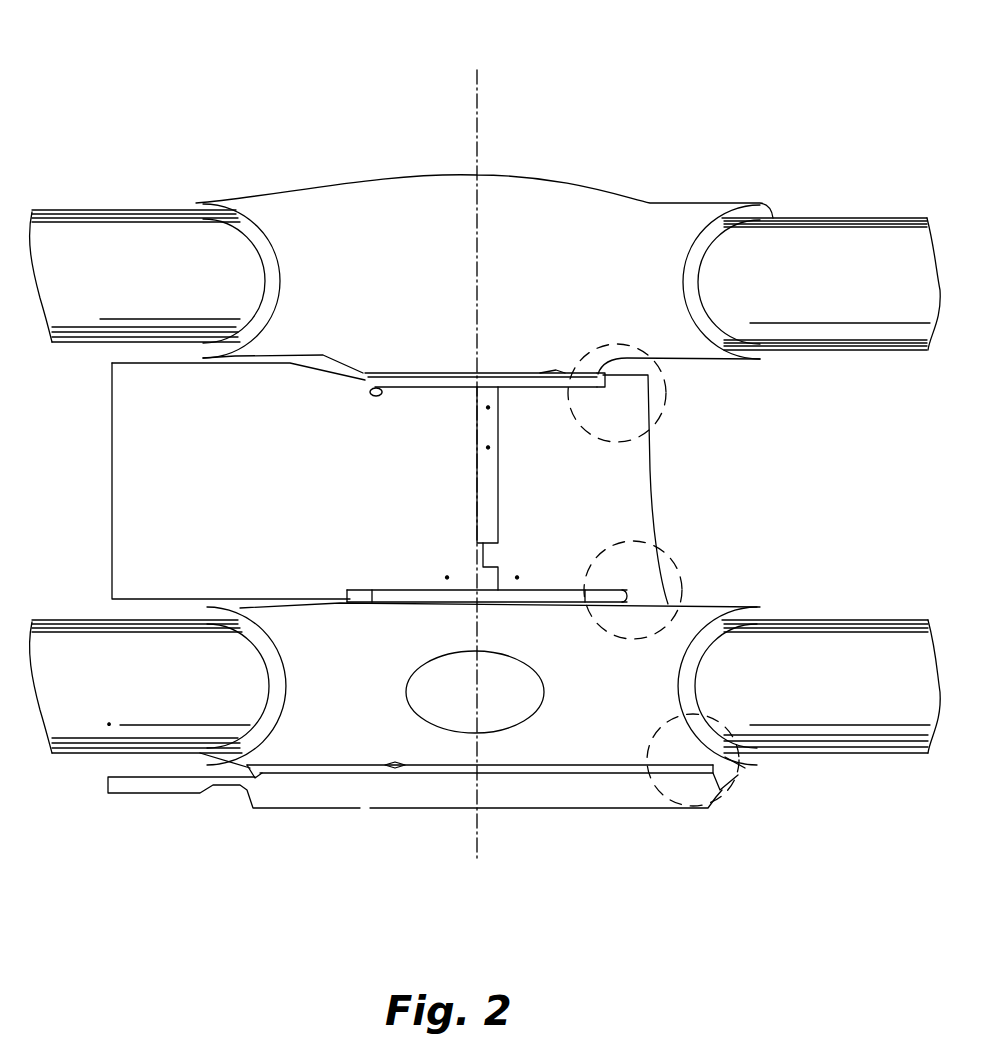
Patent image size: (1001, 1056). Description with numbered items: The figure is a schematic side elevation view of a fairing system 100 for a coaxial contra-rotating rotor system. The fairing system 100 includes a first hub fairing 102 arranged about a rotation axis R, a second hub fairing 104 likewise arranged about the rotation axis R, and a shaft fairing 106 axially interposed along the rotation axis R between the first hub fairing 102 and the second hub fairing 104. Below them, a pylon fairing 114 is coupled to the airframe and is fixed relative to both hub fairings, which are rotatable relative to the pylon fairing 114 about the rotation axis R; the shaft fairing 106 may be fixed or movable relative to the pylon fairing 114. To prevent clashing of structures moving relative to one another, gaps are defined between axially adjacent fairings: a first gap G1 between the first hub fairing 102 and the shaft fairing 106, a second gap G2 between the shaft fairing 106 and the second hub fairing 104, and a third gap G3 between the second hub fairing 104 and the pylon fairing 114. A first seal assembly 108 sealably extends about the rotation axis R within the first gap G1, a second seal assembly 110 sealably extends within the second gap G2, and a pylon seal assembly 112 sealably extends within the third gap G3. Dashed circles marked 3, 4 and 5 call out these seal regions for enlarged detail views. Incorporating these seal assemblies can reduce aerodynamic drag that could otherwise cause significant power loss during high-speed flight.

The fairing system 100 is at (205, 122).
The first hub fairing 102 is at (614, 293).
The second hub fairing 104 is at (622, 707).
The shaft fairing 106 is at (583, 499).
The first seal assembly 108 is at (590, 398).
The second seal assembly 110 is at (606, 562).
The pylon seal assembly 112 is at (660, 733).
The pylon fairing 114 is at (578, 797).
The rotation axis R is at (478, 110).
The first gap G1 is at (408, 394).
The second gap G2 is at (366, 609).
The third gap G3 is at (320, 780).
The detail view FIG. 3 is at (672, 417).
The detail view FIG. 4 is at (683, 563).
The detail view FIG. 5 is at (726, 802).